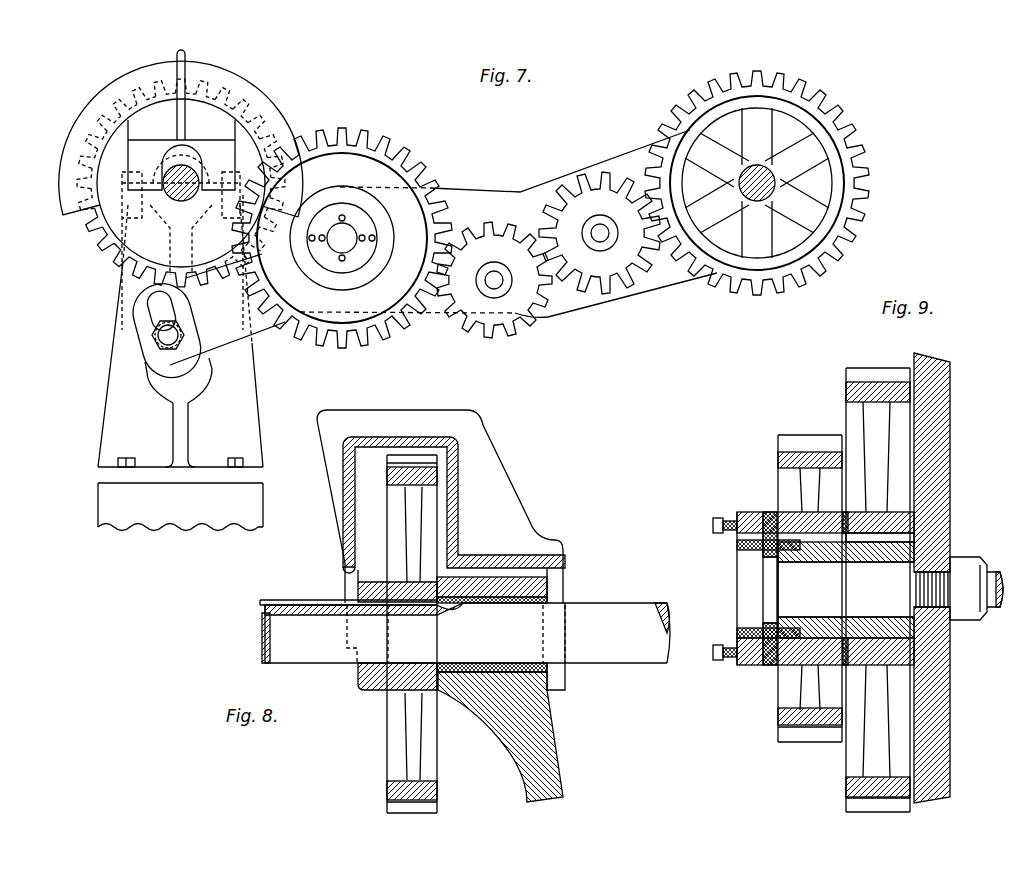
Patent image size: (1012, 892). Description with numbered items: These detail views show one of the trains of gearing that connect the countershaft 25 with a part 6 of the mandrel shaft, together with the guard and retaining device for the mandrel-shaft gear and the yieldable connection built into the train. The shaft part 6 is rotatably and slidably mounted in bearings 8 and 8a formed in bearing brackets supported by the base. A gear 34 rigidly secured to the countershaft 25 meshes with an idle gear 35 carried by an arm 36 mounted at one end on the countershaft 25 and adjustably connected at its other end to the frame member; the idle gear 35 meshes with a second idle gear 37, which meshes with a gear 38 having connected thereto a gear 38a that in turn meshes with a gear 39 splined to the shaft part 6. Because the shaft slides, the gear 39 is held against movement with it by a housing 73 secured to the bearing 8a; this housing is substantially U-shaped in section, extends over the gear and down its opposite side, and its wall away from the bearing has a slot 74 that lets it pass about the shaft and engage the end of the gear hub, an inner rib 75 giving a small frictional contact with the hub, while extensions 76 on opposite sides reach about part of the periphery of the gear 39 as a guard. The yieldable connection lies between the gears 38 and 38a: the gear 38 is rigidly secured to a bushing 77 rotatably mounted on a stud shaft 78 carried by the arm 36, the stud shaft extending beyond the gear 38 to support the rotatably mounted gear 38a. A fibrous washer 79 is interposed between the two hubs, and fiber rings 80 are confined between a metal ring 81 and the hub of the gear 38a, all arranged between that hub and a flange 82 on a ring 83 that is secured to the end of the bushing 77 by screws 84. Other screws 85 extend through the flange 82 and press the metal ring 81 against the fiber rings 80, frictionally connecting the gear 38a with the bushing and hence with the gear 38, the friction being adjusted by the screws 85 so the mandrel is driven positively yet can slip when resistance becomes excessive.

In FIG. 7, the mandrel shaft part 6 is at (190, 172).
In FIG. 8, the mandrel shaft part 6 is at (625, 655).
In FIG. 7, the bearing 8 is at (165, 210).
In FIG. 8, the bearing 8a is at (523, 698).
In FIG. 7, the countershaft 25 is at (757, 170).
In FIG. 7, the gear 34 is at (783, 282).
In FIG. 7, the idle gear 35 is at (640, 278).
In FIG. 7, the arm 36 is at (680, 278).
In FIG. 9, the arm 36 is at (950, 515).
In FIG. 7, the second idle gear 37 is at (508, 336).
In FIG. 7, the gear 38 is at (397, 153).
In FIG. 9, the gear 38 is at (862, 370).
In FIG. 7, the gear 38a is at (335, 192).
In FIG. 9, the gear 38a is at (792, 452).
In FIG. 7, the gear 39 is at (137, 250).
In FIG. 8, the gear 39 is at (412, 542).
In FIG. 7, the housing 73 is at (194, 70).
In FIG. 8, the housing 73 is at (458, 487).
In FIG. 8, the slot 74 is at (347, 577).
In FIG. 8, the rib 75 is at (360, 563).
In FIG. 7, the extensions 76 is at (73, 140).
In FIG. 9, the bushing 77 is at (905, 549).
In FIG. 9, the stud shaft 78 is at (887, 593).
In FIG. 9, the fibrous washer 79 is at (842, 657).
In FIG. 9, the fiber rings 80 is at (770, 512).
In FIG. 9, the metal ring 81 is at (752, 512).
In FIG. 9, the flange 82 is at (713, 524).
In FIG. 7, the ring 83 is at (315, 258).
In FIG. 9, the ring 83 is at (737, 540).
In FIG. 9, the screws 84 is at (750, 622).
In FIG. 7, the screws 85 is at (330, 226).
In FIG. 9, the screws 85 is at (722, 650).